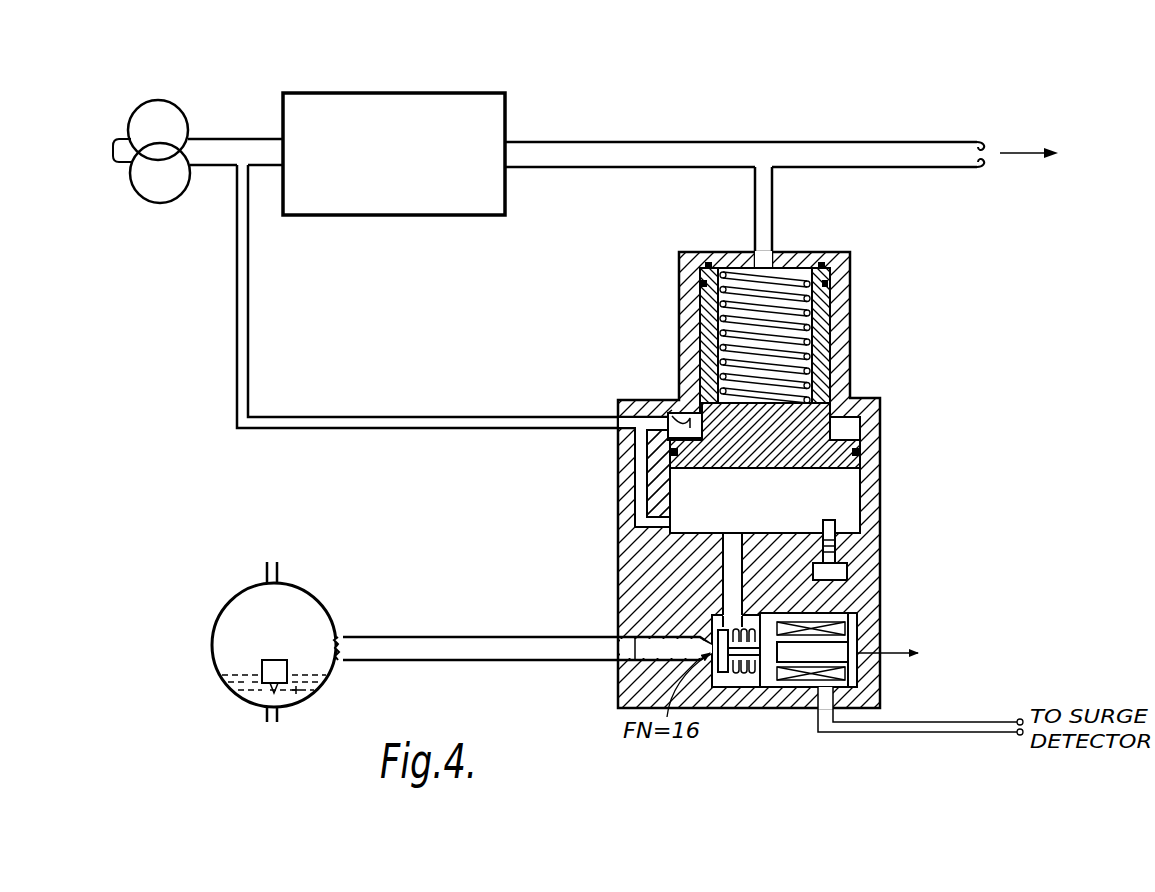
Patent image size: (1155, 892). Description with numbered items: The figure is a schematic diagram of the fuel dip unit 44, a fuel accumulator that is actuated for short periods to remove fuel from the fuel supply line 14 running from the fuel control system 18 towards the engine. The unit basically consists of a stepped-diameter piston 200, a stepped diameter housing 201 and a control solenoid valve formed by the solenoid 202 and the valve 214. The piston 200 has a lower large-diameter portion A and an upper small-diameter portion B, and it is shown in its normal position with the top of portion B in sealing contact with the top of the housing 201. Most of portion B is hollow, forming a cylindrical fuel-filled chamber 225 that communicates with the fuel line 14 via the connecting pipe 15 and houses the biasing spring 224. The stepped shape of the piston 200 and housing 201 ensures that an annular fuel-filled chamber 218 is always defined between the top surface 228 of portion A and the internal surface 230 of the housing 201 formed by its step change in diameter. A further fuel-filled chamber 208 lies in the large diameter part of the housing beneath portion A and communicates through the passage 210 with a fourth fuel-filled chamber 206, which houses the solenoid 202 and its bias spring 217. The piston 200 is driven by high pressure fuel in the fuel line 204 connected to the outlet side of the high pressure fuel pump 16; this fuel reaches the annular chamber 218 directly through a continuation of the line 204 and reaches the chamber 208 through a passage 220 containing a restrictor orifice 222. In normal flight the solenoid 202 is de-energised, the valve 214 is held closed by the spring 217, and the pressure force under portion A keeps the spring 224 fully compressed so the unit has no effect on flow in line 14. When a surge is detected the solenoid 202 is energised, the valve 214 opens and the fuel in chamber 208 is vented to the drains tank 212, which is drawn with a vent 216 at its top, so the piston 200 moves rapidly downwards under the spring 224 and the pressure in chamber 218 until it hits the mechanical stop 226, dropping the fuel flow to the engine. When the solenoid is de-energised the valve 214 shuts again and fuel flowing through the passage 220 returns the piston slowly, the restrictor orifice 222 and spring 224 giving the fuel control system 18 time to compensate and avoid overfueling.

The fuel supply line 14 is at (617, 148).
The connecting pipe 15 is at (766, 212).
The high pressure fuel pump 16 is at (142, 117).
The fuel control system 18 is at (383, 216).
The fuel dip unit 44 is at (863, 297).
The stepped-diameter piston 200 is at (805, 432).
The stepped diameter housing 201 is at (690, 357).
The control solenoid 202 is at (815, 652).
The fuel line 204 is at (430, 421).
The fourth fuel-filled chamber 206 is at (730, 678).
The fuel-filled chamber 208 is at (838, 488).
The passage 210 is at (728, 556).
The drains tank 212 is at (306, 616).
The valve 214 is at (703, 699).
The vent 216 is at (281, 563).
The bias spring 217 is at (734, 670).
The annular fuel-filled chamber 218 is at (862, 427).
The passage 220 is at (640, 502).
The restrictor orifice 222 is at (645, 463).
The biasing spring 224 is at (805, 331).
The cylindrical fuel-filled chamber 225 is at (750, 334).
The mechanical stop 226 is at (835, 522).
The top surface of portion A 228 is at (668, 418).
The internal surface of housing 230 is at (676, 411).
The lower large-diameter portion A is at (737, 452).
The upper small-diameter portion B is at (706, 301).